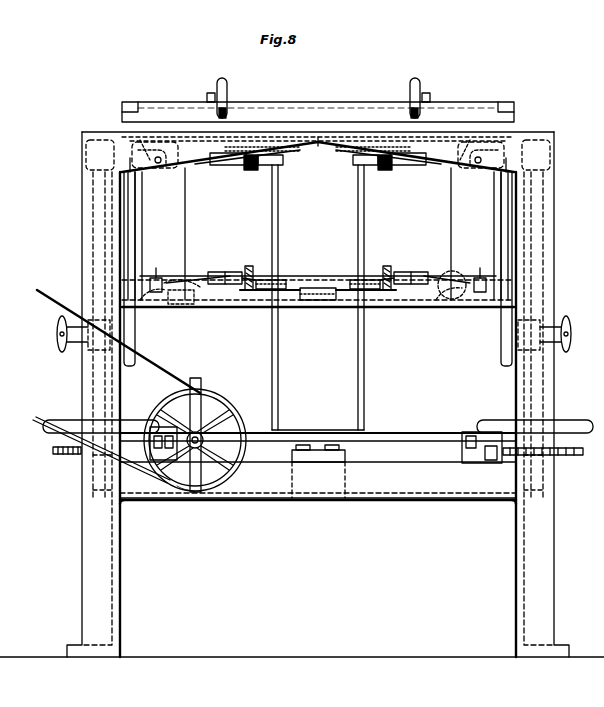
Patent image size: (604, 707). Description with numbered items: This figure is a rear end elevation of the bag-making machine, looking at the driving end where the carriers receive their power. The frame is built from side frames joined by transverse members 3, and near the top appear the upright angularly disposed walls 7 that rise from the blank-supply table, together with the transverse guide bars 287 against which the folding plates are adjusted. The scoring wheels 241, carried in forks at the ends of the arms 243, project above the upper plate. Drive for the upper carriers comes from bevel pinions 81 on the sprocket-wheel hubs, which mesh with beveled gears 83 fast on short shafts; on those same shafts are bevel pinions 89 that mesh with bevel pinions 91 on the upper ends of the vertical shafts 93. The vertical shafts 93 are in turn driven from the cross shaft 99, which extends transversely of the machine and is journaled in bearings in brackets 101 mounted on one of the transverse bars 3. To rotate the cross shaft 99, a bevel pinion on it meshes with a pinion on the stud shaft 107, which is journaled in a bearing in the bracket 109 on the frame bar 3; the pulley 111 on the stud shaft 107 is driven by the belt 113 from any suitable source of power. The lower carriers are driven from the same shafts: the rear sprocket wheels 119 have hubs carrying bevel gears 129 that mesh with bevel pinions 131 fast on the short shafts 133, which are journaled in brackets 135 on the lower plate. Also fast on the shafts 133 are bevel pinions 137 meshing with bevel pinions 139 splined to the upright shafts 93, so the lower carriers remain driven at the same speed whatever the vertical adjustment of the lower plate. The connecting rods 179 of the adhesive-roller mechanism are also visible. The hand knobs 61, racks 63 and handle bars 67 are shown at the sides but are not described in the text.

The transverse member 3 is at (368, 504).
The upright angularly disposed wall 7 is at (202, 215).
The hand knob 61 is at (56, 334).
The rack 63 is at (58, 456).
The handle bar 67 is at (60, 420).
The bevel pinion 81 is at (284, 164).
The beveled gear 83 is at (250, 170).
The bevel pinion 89 is at (170, 146).
The bevel pinion 91 is at (150, 165).
The vertical shaft 93 is at (140, 198).
The cross shaft 99 is at (392, 433).
The bracket 101 is at (168, 427).
The stud shaft 107 is at (232, 414).
The bracket 109 is at (208, 478).
The pulley 111 is at (203, 395).
The belt 113 is at (182, 372).
The sprocket wheel 119 is at (328, 287).
The bevel gear 129 is at (266, 278).
The bevel pinion 131 is at (248, 266).
The short shaft 133 is at (207, 282).
The bracket 135 is at (222, 272).
The bevel pinion 137 is at (158, 278).
The bevel pinion 139 is at (166, 283).
The connecting rod 179 is at (128, 233).
The scoring wheel 241 is at (218, 112).
The arm 243 is at (228, 84).
The transverse guide bar 287 is at (303, 120).